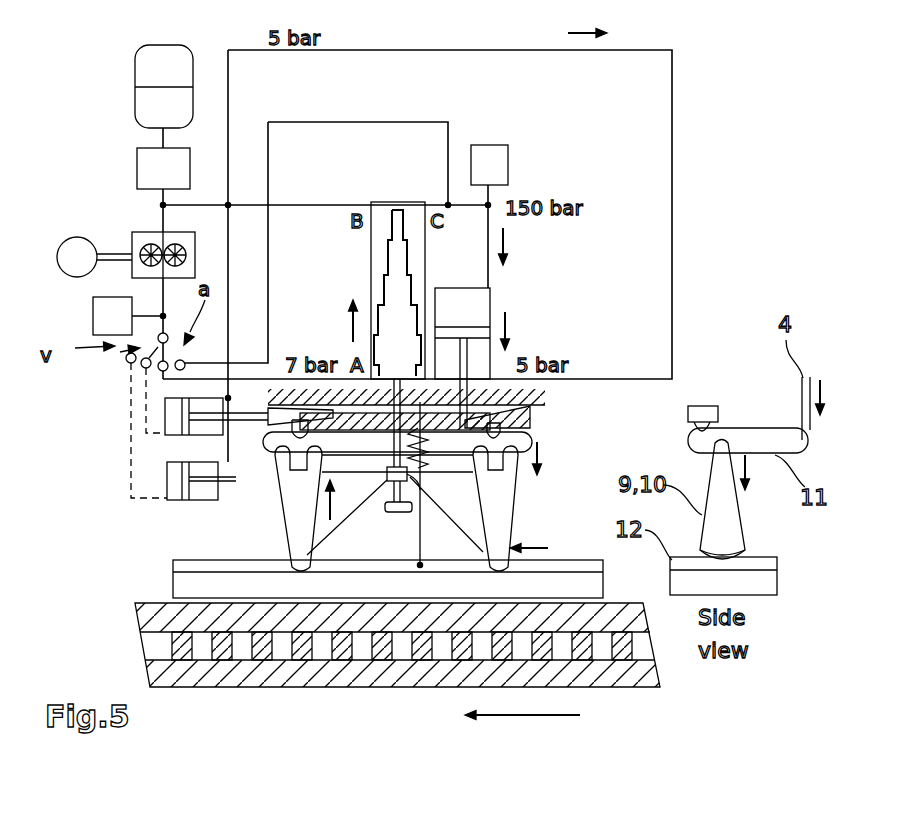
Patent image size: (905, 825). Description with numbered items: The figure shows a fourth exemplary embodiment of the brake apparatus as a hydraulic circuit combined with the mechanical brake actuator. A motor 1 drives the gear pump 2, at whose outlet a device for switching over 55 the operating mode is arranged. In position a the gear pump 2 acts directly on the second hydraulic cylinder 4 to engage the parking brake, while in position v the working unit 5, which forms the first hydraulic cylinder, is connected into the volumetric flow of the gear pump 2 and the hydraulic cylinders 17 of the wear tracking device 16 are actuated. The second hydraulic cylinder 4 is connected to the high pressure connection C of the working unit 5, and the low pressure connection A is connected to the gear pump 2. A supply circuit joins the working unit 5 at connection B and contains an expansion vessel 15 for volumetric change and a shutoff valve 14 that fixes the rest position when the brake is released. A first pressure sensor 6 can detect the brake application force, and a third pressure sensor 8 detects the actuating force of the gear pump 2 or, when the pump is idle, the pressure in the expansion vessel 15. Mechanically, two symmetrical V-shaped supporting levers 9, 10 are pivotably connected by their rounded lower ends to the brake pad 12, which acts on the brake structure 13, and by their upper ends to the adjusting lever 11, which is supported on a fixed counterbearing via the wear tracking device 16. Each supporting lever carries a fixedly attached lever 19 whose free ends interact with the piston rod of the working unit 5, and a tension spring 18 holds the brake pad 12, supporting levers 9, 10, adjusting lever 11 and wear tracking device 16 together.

The motor 1 is at (62, 247).
The gear pump 2 is at (140, 232).
The second hydraulic cylinder 4 is at (493, 305).
The working unit 5 is at (385, 202).
The first pressure sensor 6 is at (508, 165).
The third pressure sensor 8 is at (93, 314).
The V-shaped supporting lever 9 is at (290, 530).
The V-shaped supporting lever 10 is at (510, 495).
The adjusting lever 11 is at (532, 440).
The brake pad 12 is at (192, 562).
The mold structure 13 is at (158, 603).
The shutoff valve 14 is at (137, 162).
The expansion vessel 15 is at (135, 72).
The wear tracking device 16 is at (530, 412).
The hydraulic cylinders 17 is at (165, 430).
The tension spring 18 is at (405, 512).
The lever 19 is at (390, 492).
The switchover device 55 is at (120, 352).